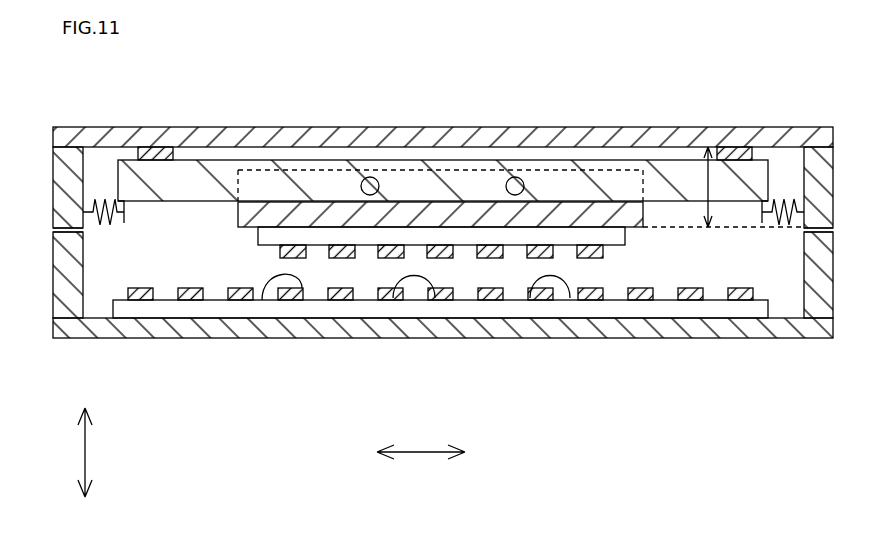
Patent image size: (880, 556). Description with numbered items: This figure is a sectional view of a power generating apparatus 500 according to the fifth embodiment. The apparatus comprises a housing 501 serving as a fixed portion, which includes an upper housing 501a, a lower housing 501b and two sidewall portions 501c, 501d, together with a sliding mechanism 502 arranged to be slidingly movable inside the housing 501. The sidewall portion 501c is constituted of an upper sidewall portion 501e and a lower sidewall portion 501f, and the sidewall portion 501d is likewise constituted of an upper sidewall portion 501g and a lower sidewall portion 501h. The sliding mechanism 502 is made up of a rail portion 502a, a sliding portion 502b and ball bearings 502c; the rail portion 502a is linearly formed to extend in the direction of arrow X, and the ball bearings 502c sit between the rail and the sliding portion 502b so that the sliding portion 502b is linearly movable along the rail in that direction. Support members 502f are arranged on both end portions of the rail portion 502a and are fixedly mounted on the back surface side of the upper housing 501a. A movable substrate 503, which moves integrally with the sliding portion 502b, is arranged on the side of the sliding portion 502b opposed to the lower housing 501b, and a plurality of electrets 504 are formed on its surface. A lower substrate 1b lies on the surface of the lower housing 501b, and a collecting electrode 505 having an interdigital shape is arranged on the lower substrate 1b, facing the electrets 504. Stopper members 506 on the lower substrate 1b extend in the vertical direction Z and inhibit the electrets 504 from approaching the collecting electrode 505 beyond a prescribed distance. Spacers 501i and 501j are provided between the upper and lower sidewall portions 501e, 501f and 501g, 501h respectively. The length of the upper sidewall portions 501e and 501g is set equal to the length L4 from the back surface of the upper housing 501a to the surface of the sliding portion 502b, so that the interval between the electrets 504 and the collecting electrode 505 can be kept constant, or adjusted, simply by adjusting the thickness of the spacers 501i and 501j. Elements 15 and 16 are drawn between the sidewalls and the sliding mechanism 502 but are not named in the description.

The power generating apparatus 500 is at (572, 418).
The housing 501 is at (692, 128).
The upper housing 501a is at (222, 135).
The lower housing 501b is at (220, 340).
The sidewall portion 501c is at (102, 233).
The sidewall portion 501d is at (788, 234).
The upper sidewall portion 501e is at (70, 152).
The lower sidewall portion 501f is at (72, 312).
The upper sidewall portion 501g is at (815, 148).
The lower sidewall portion 501h is at (820, 305).
The spacer 501i is at (82, 230).
The spacer 501j is at (804, 232).
The sliding mechanism 502 is at (636, 232).
The rail portion 502a is at (310, 185).
The sliding portion 502b is at (637, 208).
The ball bearings 502c is at (370, 177).
The support members 502f is at (158, 150).
The movable substrate 503 is at (400, 236).
The electrets 504 is at (483, 240).
The collecting electrode 505 is at (338, 300).
The stopper members 506 is at (268, 297).
The lower substrate 1b is at (168, 308).
The spring 15 is at (100, 207).
The spring 16 is at (790, 207).
The length L4 is at (723, 187).